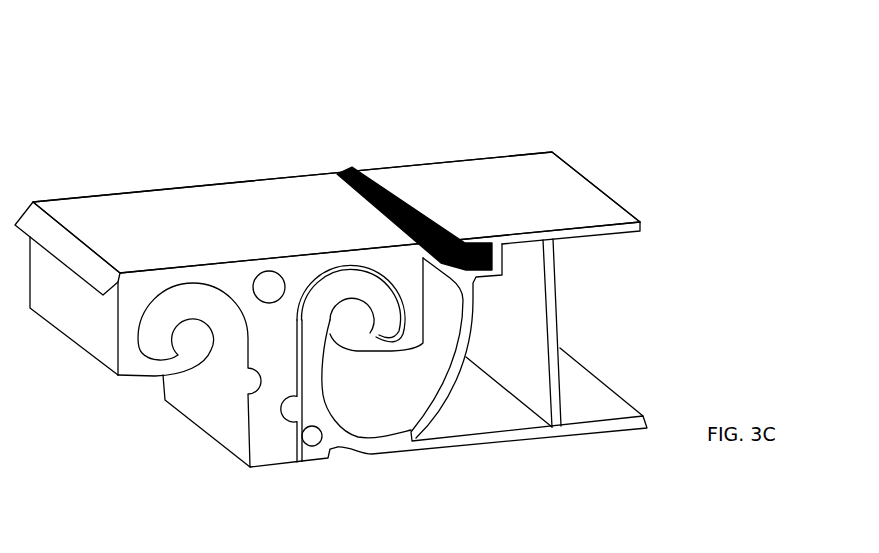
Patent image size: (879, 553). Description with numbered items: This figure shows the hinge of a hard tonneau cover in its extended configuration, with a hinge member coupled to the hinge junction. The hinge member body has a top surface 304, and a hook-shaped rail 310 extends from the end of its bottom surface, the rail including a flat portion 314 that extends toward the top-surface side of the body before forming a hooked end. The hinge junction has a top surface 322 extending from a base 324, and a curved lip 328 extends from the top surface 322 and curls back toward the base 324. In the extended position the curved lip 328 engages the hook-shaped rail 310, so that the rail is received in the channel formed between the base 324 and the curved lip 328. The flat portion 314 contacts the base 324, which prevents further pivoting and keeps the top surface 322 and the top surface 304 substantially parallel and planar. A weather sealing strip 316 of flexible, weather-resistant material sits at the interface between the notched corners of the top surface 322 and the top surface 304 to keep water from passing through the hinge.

The top surface 304 is at (497, 178).
The top surface 322 is at (185, 213).
The weather sealing strip 316 is at (348, 172).
The second curved lip 328 is at (343, 330).
The flat portion 314 is at (308, 398).
The hook-shaped rail 310 is at (392, 312).
The base 324 is at (275, 442).